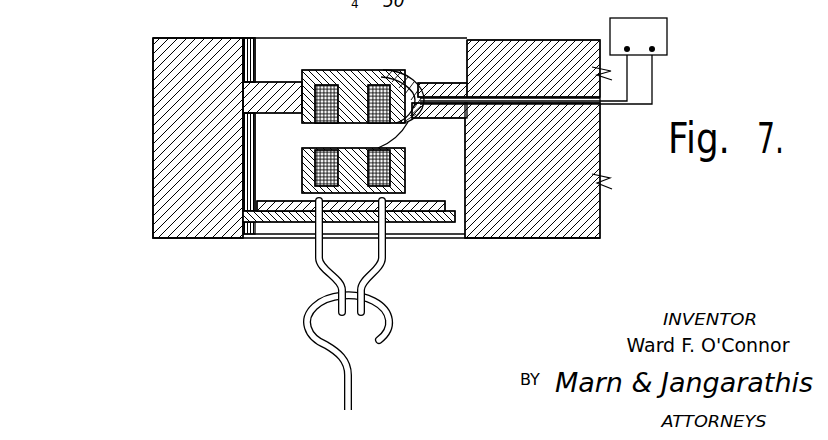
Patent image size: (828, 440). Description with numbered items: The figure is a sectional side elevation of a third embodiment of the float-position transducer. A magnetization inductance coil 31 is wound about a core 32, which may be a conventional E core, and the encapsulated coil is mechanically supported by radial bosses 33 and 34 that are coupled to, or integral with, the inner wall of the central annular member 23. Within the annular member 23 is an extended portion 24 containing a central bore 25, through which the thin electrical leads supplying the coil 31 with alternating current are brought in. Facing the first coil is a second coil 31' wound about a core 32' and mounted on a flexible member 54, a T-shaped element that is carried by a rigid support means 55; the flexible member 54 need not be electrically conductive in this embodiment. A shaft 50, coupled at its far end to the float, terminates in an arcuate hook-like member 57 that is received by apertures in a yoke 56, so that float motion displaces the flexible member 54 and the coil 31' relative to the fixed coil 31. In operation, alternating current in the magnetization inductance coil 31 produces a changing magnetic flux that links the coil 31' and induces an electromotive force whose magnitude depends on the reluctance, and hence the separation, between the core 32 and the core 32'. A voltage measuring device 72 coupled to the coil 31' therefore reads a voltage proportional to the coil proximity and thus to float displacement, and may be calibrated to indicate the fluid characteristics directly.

The central annular member 23 is at (153, 147).
The extended portion 24 is at (507, 238).
The central bore 25 is at (534, 95).
The magnetization inductance coil 31 is at (343, 69).
The coil 31' is at (361, 154).
The core 32 is at (353, 83).
The core 32' is at (373, 170).
The radial boss 33 is at (264, 82).
The radial boss 34 is at (425, 83).
The shaft 50 is at (352, 393).
The flexible member 54 is at (278, 201).
The rigid support means 55 is at (283, 228).
The yoke 56 is at (385, 264).
The arcuate hook-like member 57 is at (392, 325).
The voltage measuring device 72 is at (667, 32).